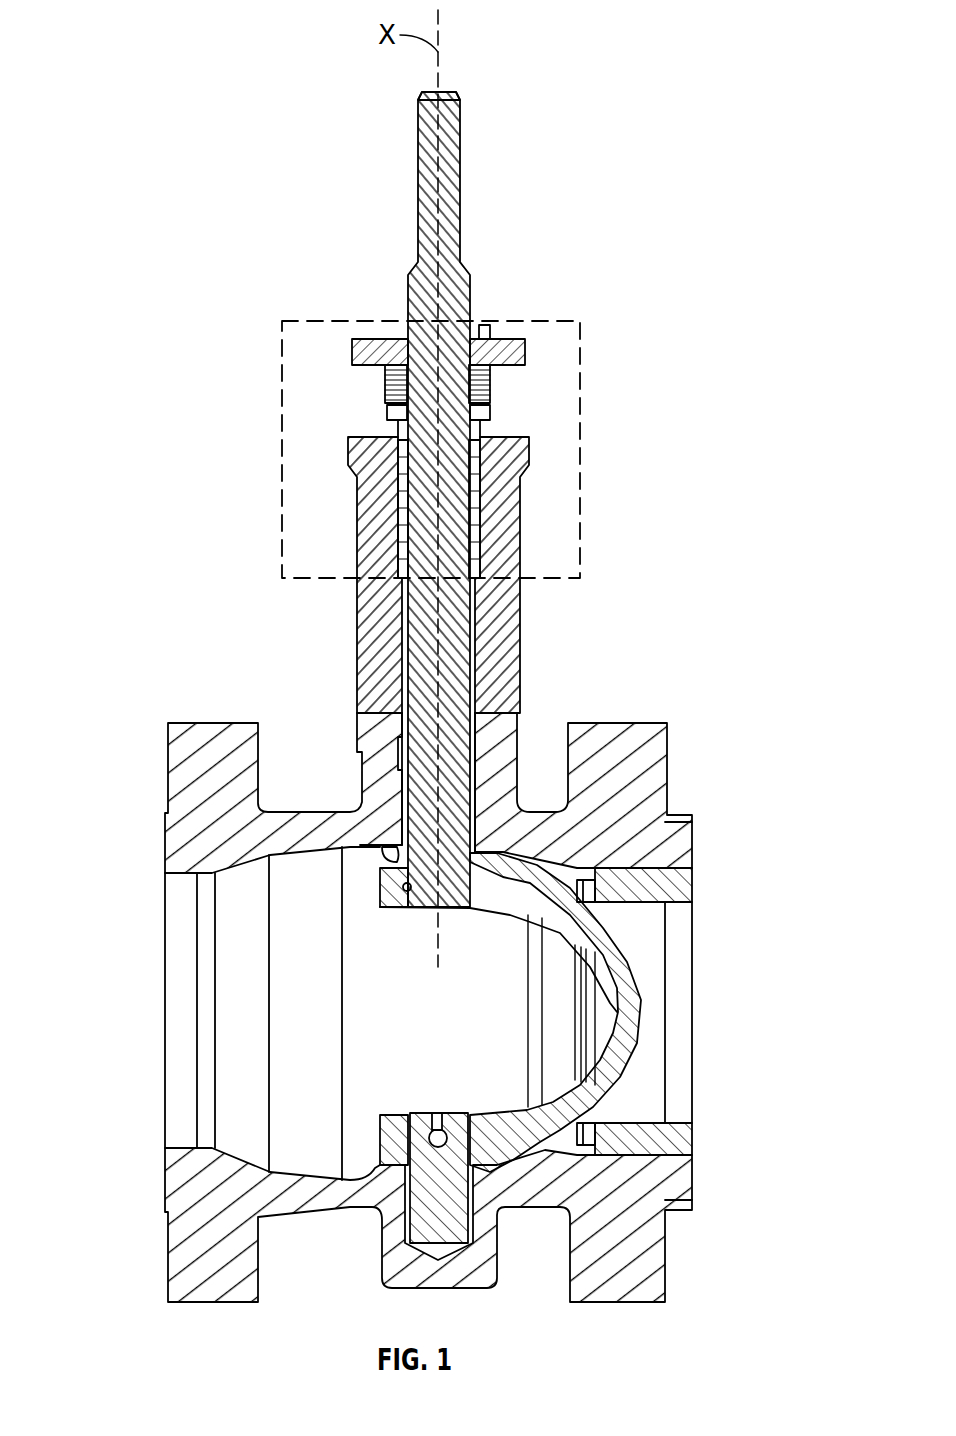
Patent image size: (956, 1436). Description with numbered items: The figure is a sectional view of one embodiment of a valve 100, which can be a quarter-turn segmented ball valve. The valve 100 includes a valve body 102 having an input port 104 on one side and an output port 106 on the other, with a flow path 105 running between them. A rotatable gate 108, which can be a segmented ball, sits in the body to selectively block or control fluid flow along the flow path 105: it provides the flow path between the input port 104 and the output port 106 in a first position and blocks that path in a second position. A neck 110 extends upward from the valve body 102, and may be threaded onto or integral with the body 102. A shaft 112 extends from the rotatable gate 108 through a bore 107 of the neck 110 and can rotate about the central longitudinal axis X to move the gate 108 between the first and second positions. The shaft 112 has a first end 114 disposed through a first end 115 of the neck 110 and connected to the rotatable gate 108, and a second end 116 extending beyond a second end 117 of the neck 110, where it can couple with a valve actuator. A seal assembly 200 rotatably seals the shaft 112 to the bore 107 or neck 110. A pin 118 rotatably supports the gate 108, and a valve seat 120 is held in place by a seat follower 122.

The valve 100 is at (663, 31).
The valve body 102 is at (652, 735).
The input port 104 is at (728, 995).
The flow path 105 is at (468, 1031).
The output port 106 is at (144, 993).
The bore 107 is at (477, 653).
The rotatable gate 108 is at (628, 1007).
The neck 110 is at (368, 668).
The shaft 112 is at (418, 165).
The first end 114 is at (380, 905).
The first end 115 is at (571, 725).
The second end 116 is at (422, 108).
The second end 117 is at (505, 437).
The pin 118 is at (423, 1130).
The valve seat 120 is at (643, 897).
The seat follower 122 is at (680, 1168).
The seal assembly 200 is at (555, 320).